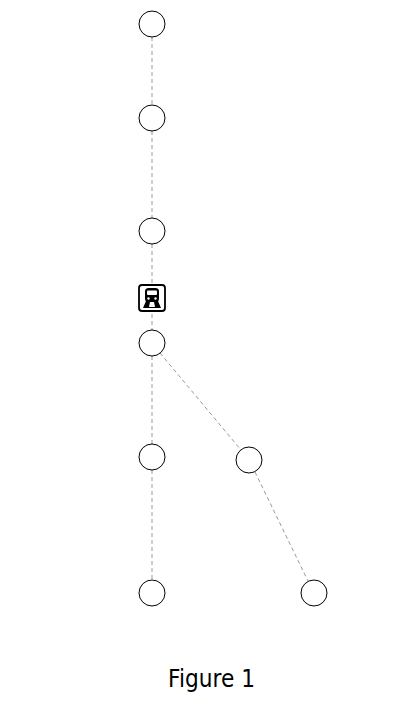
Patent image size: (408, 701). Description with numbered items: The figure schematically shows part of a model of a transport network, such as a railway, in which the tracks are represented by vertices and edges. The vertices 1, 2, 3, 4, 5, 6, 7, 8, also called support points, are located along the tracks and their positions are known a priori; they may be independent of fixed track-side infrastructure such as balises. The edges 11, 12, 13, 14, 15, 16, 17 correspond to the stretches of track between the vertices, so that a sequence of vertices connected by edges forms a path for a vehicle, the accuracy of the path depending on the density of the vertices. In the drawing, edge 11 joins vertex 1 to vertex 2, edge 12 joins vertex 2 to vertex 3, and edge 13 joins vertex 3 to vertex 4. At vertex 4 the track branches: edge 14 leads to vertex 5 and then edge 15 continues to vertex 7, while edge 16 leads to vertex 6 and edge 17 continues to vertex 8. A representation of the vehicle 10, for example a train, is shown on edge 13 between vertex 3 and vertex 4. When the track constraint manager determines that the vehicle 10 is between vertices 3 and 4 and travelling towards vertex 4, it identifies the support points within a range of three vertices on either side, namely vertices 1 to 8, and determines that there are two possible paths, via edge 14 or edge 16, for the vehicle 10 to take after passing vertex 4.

The vertex 1 is at (152, 24).
The vertex 2 is at (152, 118).
The vertex 3 is at (152, 231).
The vertex 4 is at (152, 343).
The vertex 5 is at (152, 457).
The vertex 6 is at (249, 460).
The vertex 7 is at (152, 593).
The vertex 8 is at (314, 593).
The vehicle 10 is at (165, 298).
The edge 11 is at (150, 65).
The edge 12 is at (150, 170).
The edge 13 is at (150, 265).
The edge 14 is at (150, 397).
The edge 15 is at (150, 513).
The edge 16 is at (197, 396).
The edge 17 is at (282, 530).